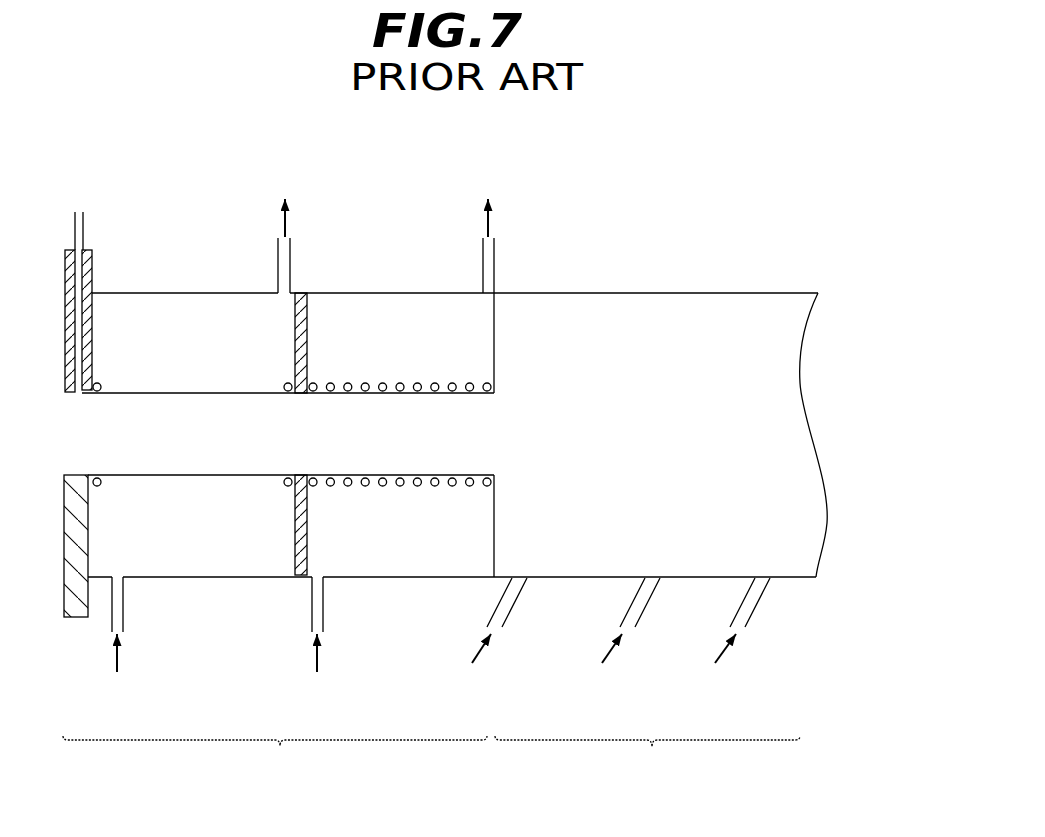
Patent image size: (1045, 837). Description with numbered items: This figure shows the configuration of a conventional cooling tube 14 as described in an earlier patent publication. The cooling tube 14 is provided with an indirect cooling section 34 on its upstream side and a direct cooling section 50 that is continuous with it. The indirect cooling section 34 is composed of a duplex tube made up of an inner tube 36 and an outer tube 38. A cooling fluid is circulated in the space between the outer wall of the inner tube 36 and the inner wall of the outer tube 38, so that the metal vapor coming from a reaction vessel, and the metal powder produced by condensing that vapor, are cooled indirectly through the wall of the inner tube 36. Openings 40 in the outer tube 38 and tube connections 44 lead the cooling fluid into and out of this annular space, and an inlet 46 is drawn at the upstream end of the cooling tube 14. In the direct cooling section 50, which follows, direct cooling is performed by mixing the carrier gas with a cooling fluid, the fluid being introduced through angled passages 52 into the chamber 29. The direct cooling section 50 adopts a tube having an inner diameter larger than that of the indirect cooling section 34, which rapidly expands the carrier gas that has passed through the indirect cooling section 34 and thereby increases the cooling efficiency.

The cooling tube 14 is at (349, 286).
The cooling chamber 29 is at (375, 555).
The indirect cooling section 34 is at (275, 760).
The inner tube 36 is at (225, 477).
The outer tube 38 is at (240, 577).
The cooling flow inlet passages 40 is at (237, 383).
The cooling flow outlet tubes 44 is at (278, 263).
The inlet passage 46 is at (79, 211).
The direct cooling section 50 is at (647, 760).
The angled cooling holes 52 is at (503, 593).